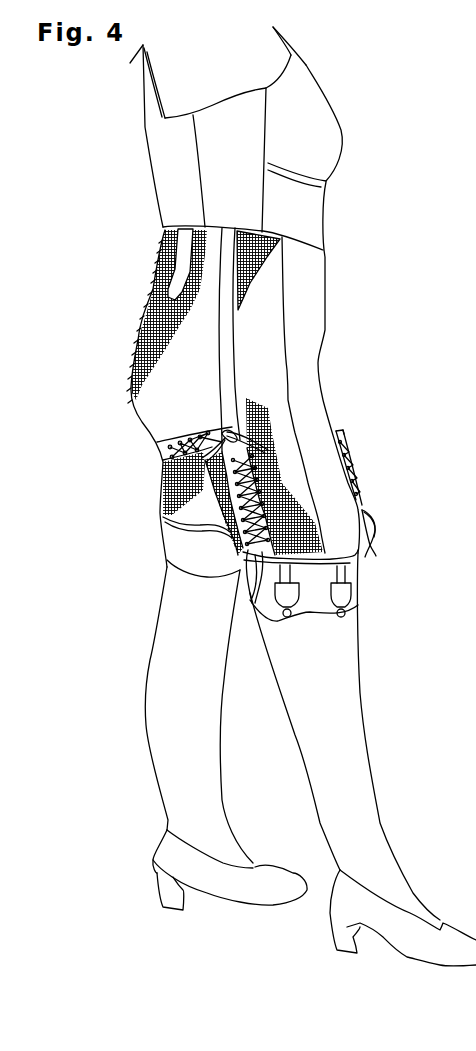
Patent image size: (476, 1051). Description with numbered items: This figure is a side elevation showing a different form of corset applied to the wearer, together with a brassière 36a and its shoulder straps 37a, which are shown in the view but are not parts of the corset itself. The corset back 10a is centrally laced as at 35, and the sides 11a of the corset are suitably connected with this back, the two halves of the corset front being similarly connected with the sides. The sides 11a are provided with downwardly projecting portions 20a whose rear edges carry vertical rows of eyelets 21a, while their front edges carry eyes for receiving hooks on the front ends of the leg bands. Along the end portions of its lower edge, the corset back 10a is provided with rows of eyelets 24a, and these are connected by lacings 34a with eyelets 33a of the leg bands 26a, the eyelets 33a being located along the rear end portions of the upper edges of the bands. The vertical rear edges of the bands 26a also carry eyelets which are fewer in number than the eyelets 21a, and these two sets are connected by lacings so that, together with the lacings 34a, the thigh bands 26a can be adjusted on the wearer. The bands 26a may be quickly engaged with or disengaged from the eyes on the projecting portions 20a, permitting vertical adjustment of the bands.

The shoulder straps 37a is at (145, 99).
The brassière 36a is at (253, 127).
The corset back 10a is at (153, 311).
The central lacing 35 is at (127, 354).
The eyelets 24a is at (192, 423).
The sides 11a is at (275, 394).
The lacings 34a is at (190, 456).
The eyelets 33a is at (208, 468).
The leg bands 26a is at (190, 526).
The downwardly projecting portions 20a is at (325, 522).
The eyelets 21a is at (257, 580).